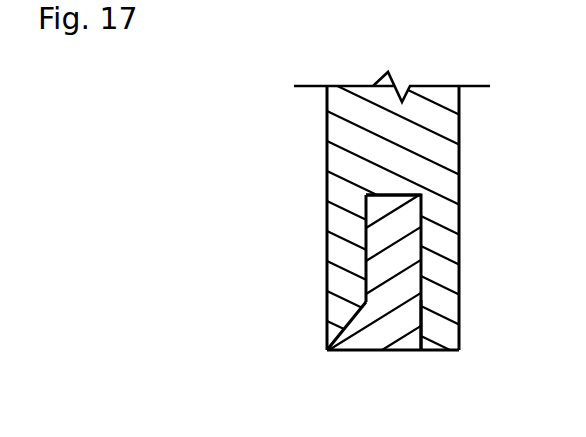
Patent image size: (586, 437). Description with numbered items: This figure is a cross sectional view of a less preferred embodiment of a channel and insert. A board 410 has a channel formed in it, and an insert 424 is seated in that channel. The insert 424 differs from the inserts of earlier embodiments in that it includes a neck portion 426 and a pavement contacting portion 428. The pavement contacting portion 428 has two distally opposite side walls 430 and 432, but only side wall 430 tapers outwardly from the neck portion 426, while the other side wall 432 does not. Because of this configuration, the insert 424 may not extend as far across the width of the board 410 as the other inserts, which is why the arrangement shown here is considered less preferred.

The board 410 is at (460, 160).
The insert 424 is at (422, 267).
The neck portion 426 is at (400, 195).
The pavement contacting portion 428 is at (368, 350).
The side wall 430 is at (326, 307).
The side wall 432 is at (422, 329).